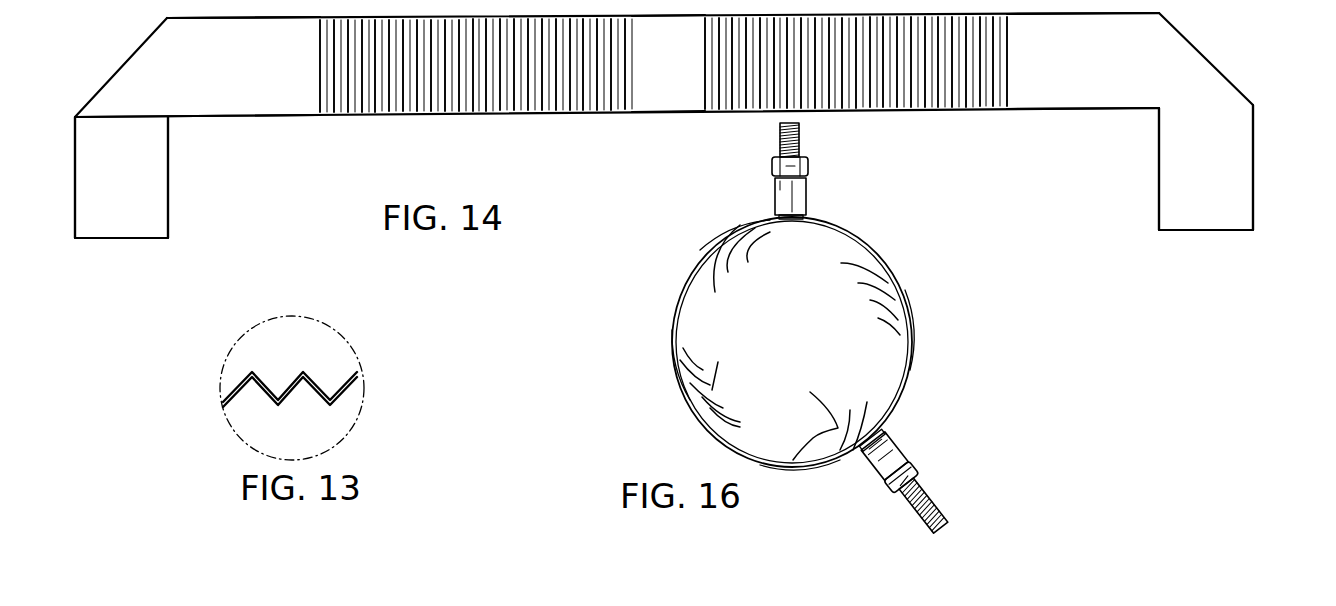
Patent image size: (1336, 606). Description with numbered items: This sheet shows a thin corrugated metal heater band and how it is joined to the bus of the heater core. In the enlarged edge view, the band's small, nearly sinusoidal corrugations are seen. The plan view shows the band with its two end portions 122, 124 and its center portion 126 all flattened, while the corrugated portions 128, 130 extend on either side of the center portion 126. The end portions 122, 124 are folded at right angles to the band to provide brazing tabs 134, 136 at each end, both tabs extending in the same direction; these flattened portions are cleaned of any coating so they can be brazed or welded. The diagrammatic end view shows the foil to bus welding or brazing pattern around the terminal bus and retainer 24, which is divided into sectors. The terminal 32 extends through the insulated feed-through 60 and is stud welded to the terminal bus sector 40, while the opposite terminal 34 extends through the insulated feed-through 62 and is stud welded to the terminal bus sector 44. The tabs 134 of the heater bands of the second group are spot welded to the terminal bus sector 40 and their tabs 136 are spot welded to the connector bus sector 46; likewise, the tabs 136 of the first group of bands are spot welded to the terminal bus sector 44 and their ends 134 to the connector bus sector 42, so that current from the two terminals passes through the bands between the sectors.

In FIG. 16, the terminal bus and retainer 24 is at (912, 284).
In FIG. 14, the terminal 32 is at (799, 141).
In FIG. 16, the terminal 34 is at (918, 490).
In FIG. 16, the terminal bus sector 40 is at (733, 232).
In FIG. 16, the connector bus sector 42 is at (672, 378).
In FIG. 16, the terminal bus sector 44 is at (832, 465).
In FIG. 16, the connector bus sector 46 is at (912, 328).
In FIG. 16, the insulated feed-through 60 is at (813, 182).
In FIG. 16, the insulated feed-through 62 is at (900, 434).
In FIG. 14, the end portion 122 is at (257, 88).
In FIG. 14, the end portion 124 is at (1100, 87).
In FIG. 14, the center portion 126 is at (663, 104).
In FIG. 14, the corrugated portion 128 is at (465, 105).
In FIG. 14, the corrugated portion 130 is at (873, 110).
In FIG. 14, the brazing tab 134 is at (135, 190).
In FIG. 16, the brazing tab 134 is at (768, 245).
In FIG. 14, the brazing tab 136 is at (1220, 176).
In FIG. 16, the brazing tab 136 is at (880, 318).